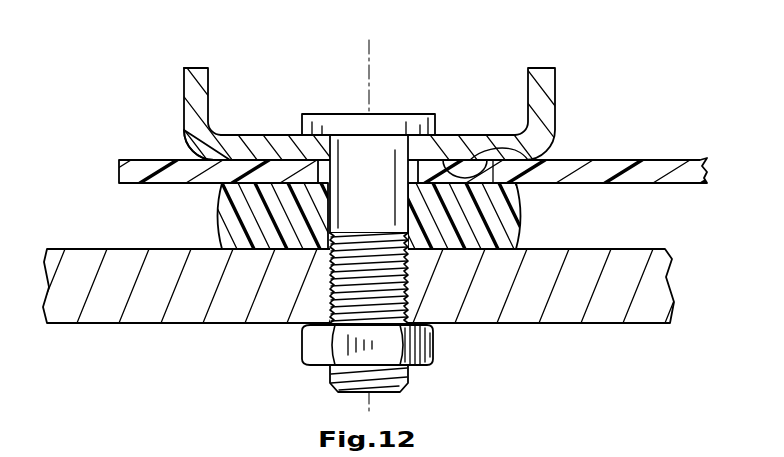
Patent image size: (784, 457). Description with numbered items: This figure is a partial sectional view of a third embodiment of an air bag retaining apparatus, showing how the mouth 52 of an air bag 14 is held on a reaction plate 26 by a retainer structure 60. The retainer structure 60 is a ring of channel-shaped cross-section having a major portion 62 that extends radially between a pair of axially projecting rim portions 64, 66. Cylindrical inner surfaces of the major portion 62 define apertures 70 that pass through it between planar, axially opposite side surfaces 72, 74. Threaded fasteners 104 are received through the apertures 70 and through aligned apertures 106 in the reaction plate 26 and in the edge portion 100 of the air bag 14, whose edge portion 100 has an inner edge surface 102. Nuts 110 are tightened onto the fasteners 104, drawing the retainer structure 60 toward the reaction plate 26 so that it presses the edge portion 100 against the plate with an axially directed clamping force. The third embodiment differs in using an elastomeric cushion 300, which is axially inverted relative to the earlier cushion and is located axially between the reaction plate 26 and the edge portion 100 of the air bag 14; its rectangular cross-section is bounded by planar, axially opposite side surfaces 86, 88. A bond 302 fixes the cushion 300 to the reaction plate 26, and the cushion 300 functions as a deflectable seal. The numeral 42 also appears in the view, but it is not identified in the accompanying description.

The air bag 14 is at (582, 144).
The reaction plate 26 is at (683, 301).
The frame member 42 is at (705, 456).
The mouth 52 is at (612, 185).
The retainer structure 60 is at (344, 110).
The major portion 62 is at (237, 145).
The rim portion 64 is at (184, 104).
The rim portion 66 is at (556, 92).
The apertures 70 is at (376, 225).
The side surface 72 is at (450, 135).
The side surface 74 is at (483, 158).
The side surface 86 is at (538, 150).
The side surface 88 is at (493, 186).
The edge portion 100 is at (247, 190).
The inner edge surface 102 is at (118, 170).
The threaded fasteners 104 is at (390, 115).
The apertures 106 is at (386, 330).
The nuts 110 is at (435, 355).
The elastomeric cushion 300 is at (331, 274).
The bond 302 is at (303, 238).